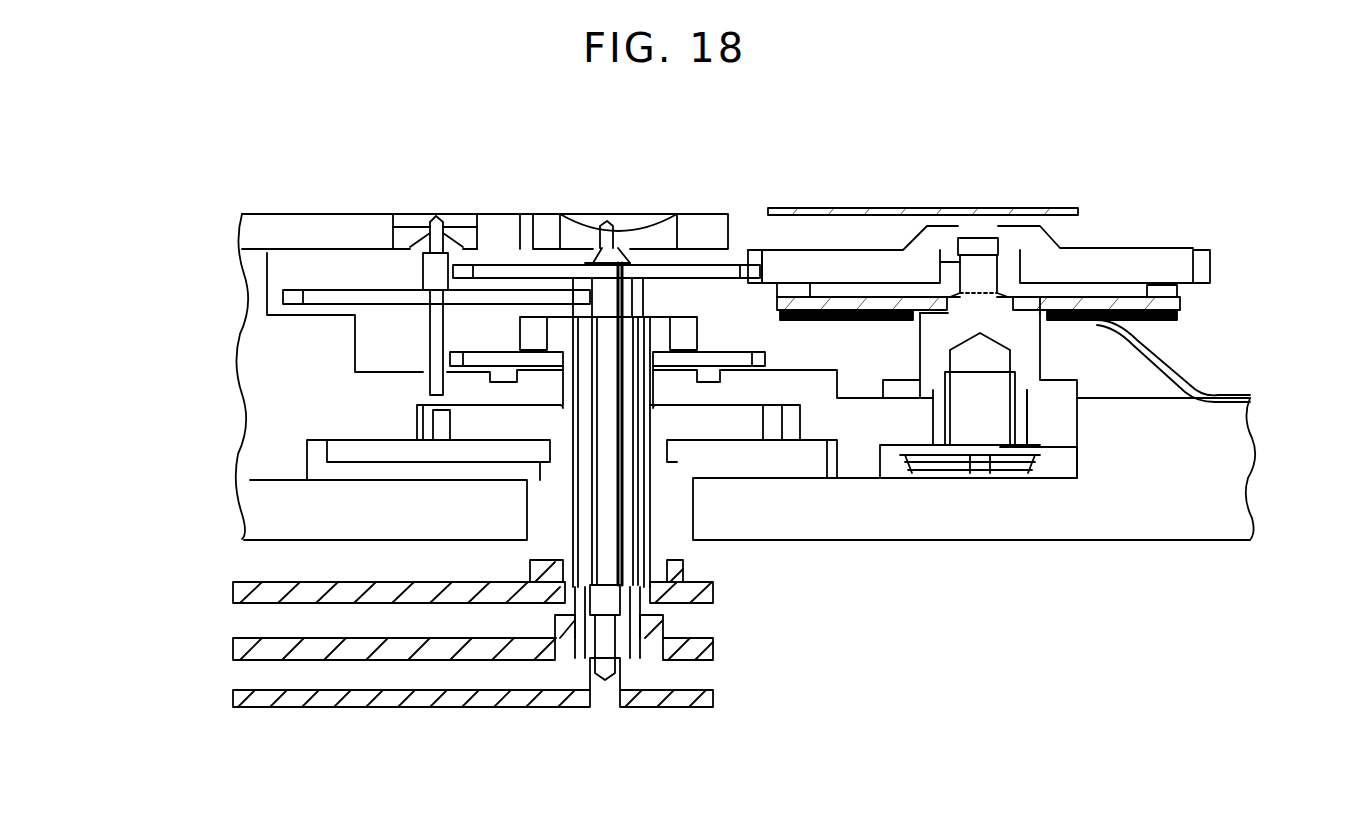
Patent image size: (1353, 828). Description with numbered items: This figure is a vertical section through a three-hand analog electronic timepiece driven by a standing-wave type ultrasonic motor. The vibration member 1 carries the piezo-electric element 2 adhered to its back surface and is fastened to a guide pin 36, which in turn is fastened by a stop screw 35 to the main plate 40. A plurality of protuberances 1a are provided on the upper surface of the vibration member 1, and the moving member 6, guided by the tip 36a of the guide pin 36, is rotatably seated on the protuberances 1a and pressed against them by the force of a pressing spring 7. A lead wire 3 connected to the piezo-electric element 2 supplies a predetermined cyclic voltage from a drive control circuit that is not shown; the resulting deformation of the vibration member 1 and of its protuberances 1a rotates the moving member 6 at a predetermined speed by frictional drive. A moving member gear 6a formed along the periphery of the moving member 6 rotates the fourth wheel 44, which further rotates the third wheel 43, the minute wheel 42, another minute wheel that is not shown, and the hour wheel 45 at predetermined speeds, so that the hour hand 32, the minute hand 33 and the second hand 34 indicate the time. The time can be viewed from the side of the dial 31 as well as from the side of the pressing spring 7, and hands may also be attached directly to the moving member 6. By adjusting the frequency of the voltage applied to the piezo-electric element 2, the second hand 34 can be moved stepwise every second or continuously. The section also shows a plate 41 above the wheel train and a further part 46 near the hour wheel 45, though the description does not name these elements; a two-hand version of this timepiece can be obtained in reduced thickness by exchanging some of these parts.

The vibration member 1 is at (1178, 308).
The protuberances 1a is at (1178, 290).
The piezo-electric element 2 is at (1170, 318).
The lead wire 3 is at (1178, 375).
The moving member 6 is at (1109, 258).
The moving member gear 6a is at (1203, 252).
The pressing spring 7 is at (1046, 206).
The dial 31 is at (1197, 530).
The hour hand 32 is at (250, 587).
The minute hand 33 is at (243, 650).
The second hand 34 is at (238, 697).
The stop screw 35 is at (980, 432).
The guide pin 36 is at (1040, 390).
The tip of the guide pin 36a is at (973, 262).
The main plate 40 is at (1232, 440).
The top plate 41 is at (245, 240).
The minute wheel 42 is at (503, 340).
The third wheel 43 is at (357, 297).
The fourth wheel 44 is at (722, 268).
The hour wheel 45 is at (753, 425).
The ring 46 is at (722, 455).